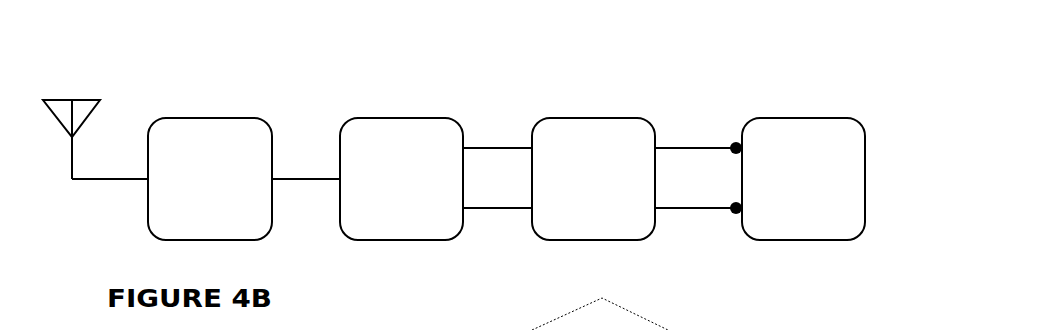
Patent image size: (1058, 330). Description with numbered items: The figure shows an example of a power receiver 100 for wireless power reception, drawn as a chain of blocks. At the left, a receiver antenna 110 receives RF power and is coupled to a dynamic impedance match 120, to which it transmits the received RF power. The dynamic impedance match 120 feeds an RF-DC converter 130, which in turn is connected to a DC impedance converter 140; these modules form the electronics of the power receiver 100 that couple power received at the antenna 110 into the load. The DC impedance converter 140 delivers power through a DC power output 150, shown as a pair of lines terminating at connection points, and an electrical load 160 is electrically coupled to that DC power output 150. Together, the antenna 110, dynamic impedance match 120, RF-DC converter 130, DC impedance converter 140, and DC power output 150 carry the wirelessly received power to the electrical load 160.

The power receiver 100 is at (800, 27).
The receiver antenna 110 is at (116, 81).
The dynamic impedance match 120 is at (184, 195).
The RF-DC converter 130 is at (376, 195).
The DC impedance converter 140 is at (567, 195).
The DC power output 150 is at (696, 102).
The electrical load 160 is at (777, 195).